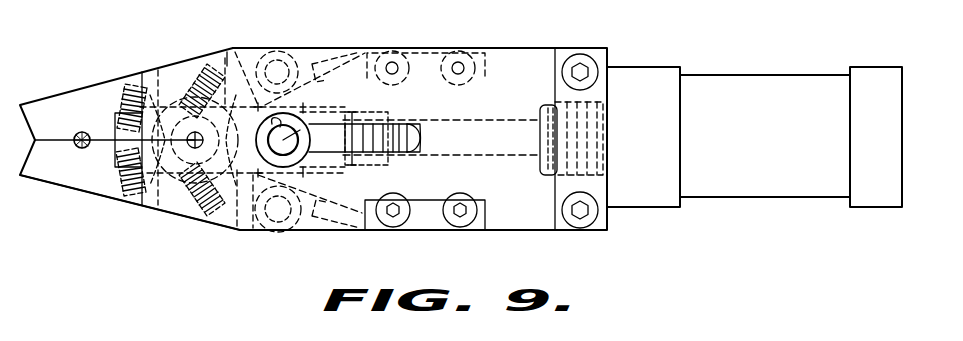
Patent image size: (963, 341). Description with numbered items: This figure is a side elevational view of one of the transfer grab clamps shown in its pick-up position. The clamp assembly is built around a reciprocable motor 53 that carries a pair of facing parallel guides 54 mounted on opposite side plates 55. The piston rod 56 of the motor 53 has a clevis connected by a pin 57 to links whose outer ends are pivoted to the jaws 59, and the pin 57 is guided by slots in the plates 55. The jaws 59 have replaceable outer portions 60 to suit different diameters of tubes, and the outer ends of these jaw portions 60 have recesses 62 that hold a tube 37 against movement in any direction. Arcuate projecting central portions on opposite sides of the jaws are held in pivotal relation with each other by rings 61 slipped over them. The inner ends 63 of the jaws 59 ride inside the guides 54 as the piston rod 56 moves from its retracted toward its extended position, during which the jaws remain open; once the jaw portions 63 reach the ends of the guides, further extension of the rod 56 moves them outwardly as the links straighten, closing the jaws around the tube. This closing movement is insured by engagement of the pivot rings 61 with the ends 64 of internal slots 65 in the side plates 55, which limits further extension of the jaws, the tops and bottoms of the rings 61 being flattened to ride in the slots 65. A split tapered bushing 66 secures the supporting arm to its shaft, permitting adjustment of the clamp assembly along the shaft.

The tube 37 is at (82, 131).
The reciprocable motor 53 is at (748, 91).
The parallel guides 54 is at (428, 62).
The side plates 55 is at (512, 65).
The piston rod 56 is at (527, 153).
The pin 57 is at (313, 115).
The jaws 59 is at (117, 157).
The replaceable outer portions 60 is at (45, 110).
The rings 61 is at (230, 105).
The recesses 62 is at (78, 150).
The inner ends of jaws 63 is at (368, 208).
The ends of internal slots 64 is at (157, 76).
The internal slots 65 is at (260, 175).
The split tapered bushing 66 is at (368, 57).